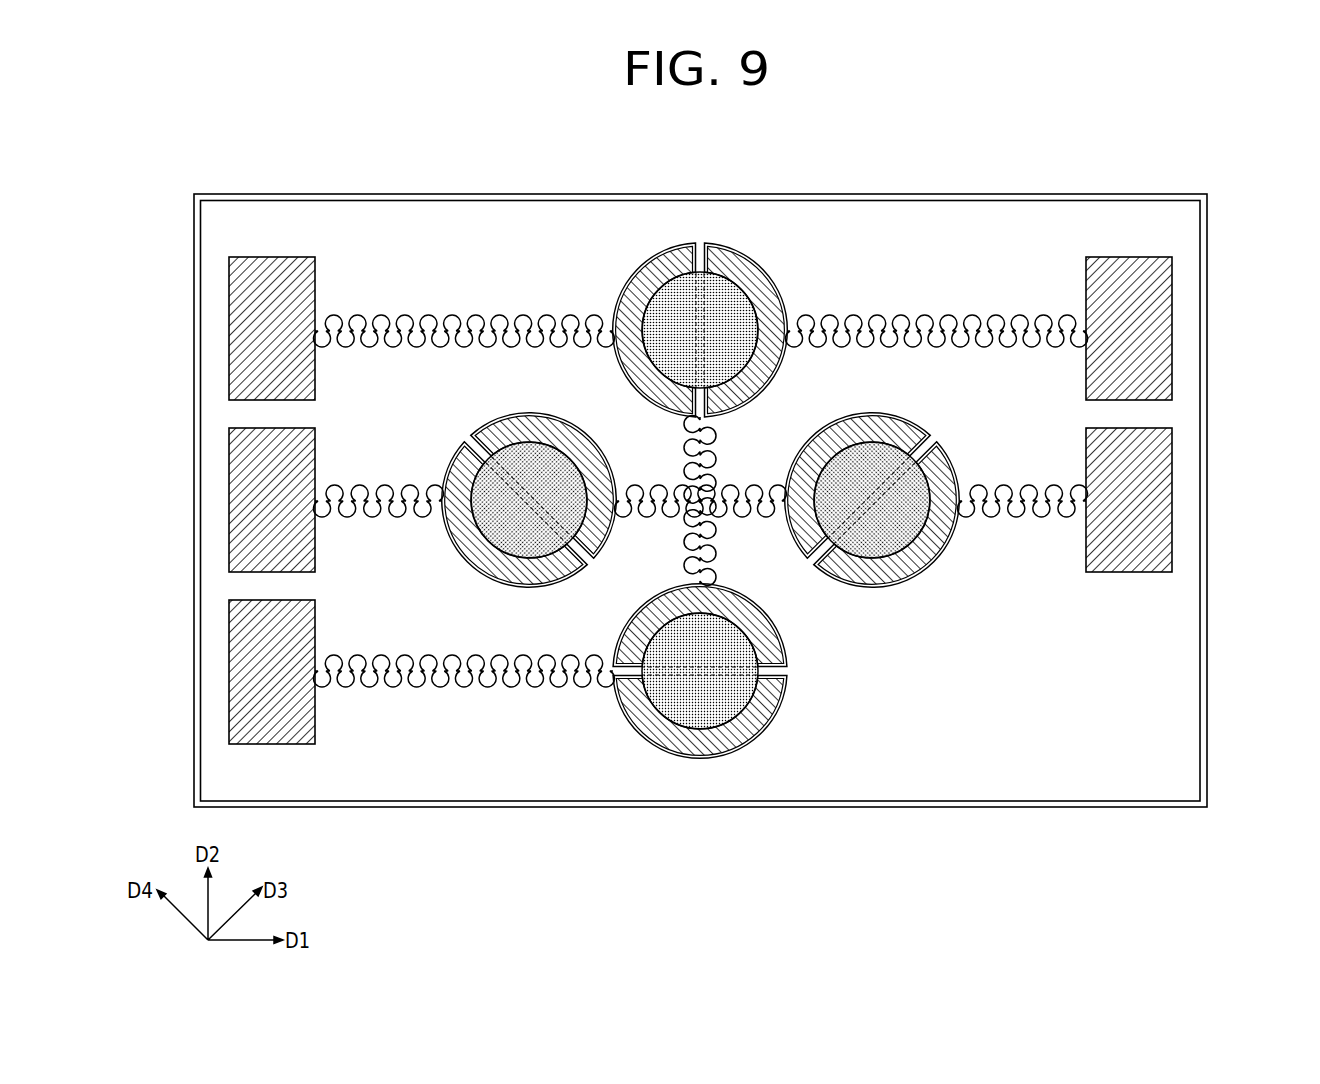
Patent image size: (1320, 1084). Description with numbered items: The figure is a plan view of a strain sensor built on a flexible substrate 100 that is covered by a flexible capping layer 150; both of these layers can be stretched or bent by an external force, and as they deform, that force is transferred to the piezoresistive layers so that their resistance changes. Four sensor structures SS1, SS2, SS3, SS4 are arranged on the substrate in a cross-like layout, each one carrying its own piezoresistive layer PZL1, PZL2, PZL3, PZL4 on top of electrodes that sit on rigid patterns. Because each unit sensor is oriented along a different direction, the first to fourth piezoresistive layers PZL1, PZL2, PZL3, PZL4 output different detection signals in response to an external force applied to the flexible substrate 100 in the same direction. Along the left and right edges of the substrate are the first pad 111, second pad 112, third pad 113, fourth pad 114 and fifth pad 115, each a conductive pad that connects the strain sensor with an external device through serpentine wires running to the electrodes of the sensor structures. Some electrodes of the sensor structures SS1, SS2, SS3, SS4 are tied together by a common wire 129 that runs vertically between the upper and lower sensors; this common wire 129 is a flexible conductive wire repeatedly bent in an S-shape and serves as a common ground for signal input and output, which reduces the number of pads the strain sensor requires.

The flexible substrate 100 is at (1203, 232).
The flexible capping layer 150 is at (1185, 267).
The first pad 111 is at (242, 324).
The second pad 112 is at (1162, 315).
The third pad 113 is at (242, 494).
The fourth pad 114 is at (1162, 497).
The fifth pad 115 is at (242, 666).
The common wire 129 is at (745, 483).
The first unit sensor SS1 is at (761, 245).
The second unit sensor SS2 is at (495, 404).
The third unit sensor SS3 is at (905, 404).
The fourth sensor structure SS4 is at (750, 766).
The first piezoresistive layer PZL1 is at (660, 300).
The second piezoresistive layer PZL2 is at (515, 542).
The third piezoresistive layer PZL3 is at (890, 542).
The fourth piezoresistive layer PZL4 is at (702, 712).